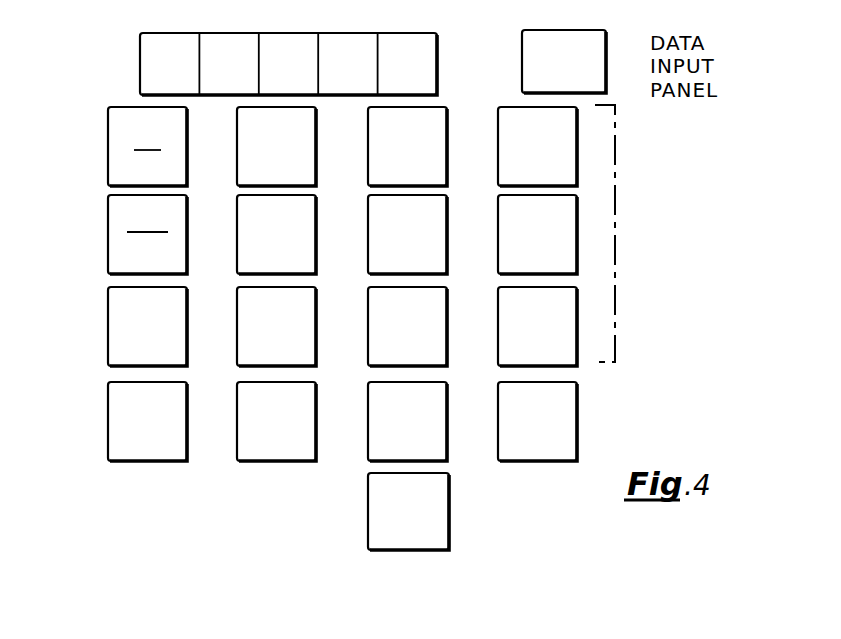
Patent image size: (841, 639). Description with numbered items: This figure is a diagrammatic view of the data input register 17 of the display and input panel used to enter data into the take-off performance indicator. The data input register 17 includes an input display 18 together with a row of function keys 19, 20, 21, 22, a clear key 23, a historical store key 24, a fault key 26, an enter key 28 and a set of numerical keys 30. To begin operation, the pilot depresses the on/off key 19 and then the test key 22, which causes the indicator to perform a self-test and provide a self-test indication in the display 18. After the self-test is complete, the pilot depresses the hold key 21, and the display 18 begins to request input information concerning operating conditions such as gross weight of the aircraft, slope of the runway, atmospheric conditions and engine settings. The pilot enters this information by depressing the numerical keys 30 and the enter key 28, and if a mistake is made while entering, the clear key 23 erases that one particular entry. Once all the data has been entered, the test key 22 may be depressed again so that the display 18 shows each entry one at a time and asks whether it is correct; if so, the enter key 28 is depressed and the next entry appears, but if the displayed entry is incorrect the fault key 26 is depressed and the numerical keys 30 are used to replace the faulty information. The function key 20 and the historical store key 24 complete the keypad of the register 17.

The data input register 17 is at (305, 26).
The input display 18 is at (140, 58).
The on/off key 19 is at (108, 128).
The function key 20 is at (108, 233).
The hold key 21 is at (108, 305).
The test key 22 is at (108, 398).
The clear key 23 is at (262, 463).
The historical store key 24 is at (368, 494).
The fault key 26 is at (545, 461).
The enter key 28 is at (557, 30).
The numerical keys 30 is at (615, 230).